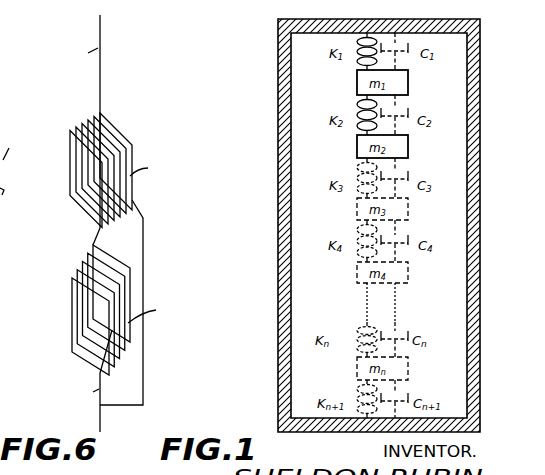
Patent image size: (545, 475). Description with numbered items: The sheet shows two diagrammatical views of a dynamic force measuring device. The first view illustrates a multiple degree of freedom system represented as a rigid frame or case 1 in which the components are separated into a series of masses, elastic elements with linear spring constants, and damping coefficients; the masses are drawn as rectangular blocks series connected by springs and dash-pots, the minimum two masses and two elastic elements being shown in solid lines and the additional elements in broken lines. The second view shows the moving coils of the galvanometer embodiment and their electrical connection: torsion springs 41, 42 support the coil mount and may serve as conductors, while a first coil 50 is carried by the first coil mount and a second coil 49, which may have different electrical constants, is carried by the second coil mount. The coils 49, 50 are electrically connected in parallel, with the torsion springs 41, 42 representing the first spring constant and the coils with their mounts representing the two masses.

In FIG. 6, the torsion spring 41 is at (104, 65).
In FIG. 6, the second coil 49 is at (118, 146).
In FIG. 6, the first coil 50 is at (128, 283).
In FIG. 6, the torsion spring 42 is at (101, 430).
In FIG. 1, the rigid frame or case 1 is at (470, 72).